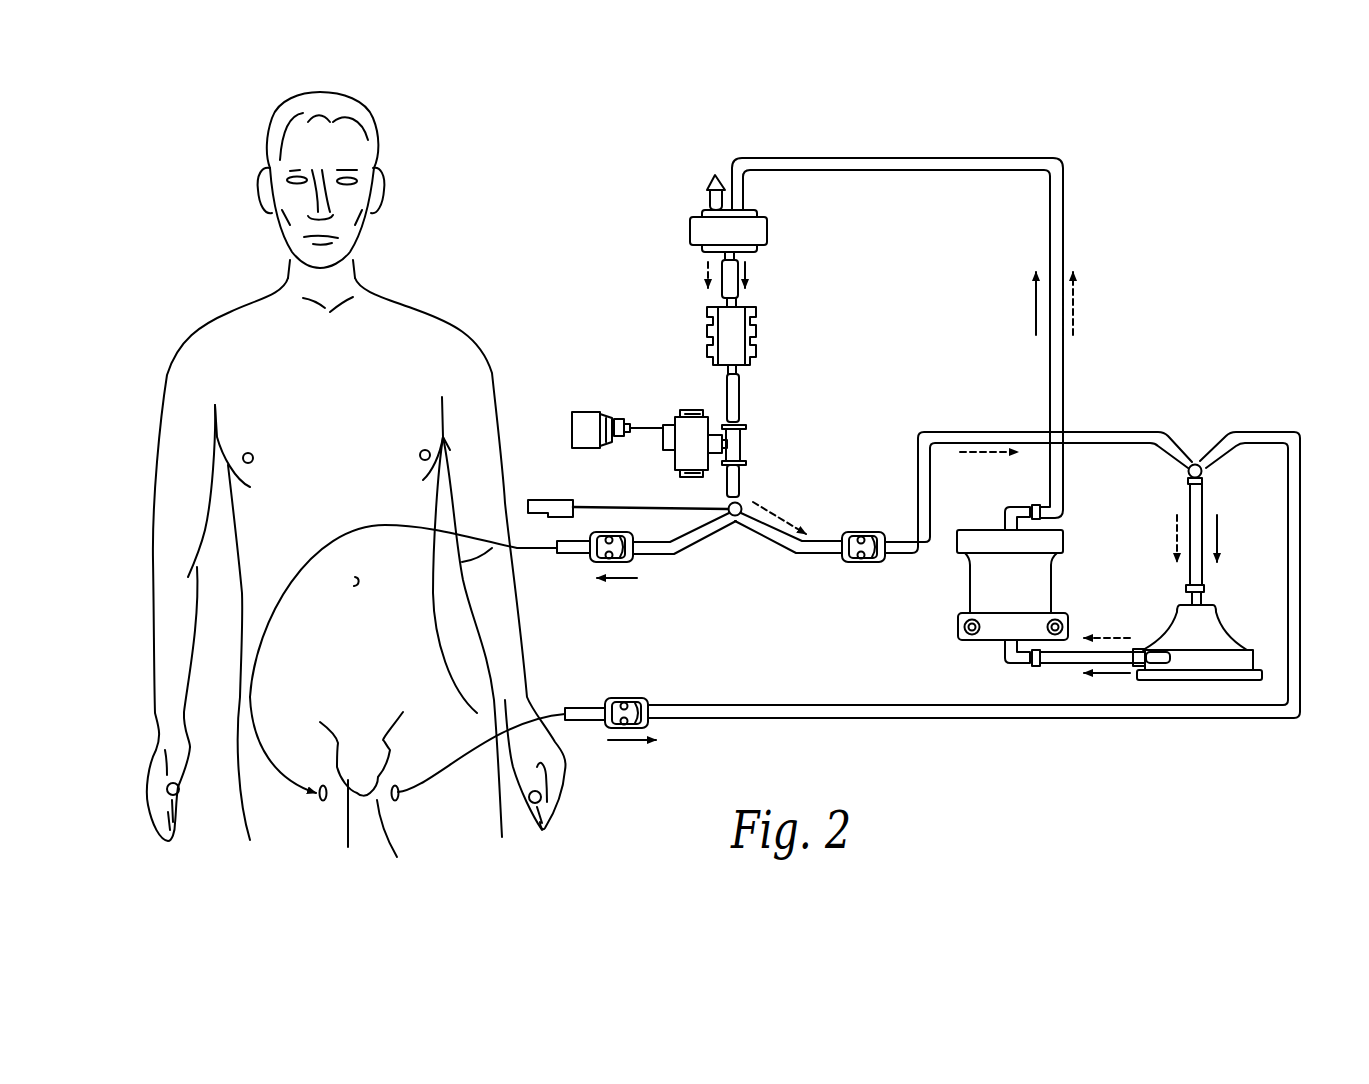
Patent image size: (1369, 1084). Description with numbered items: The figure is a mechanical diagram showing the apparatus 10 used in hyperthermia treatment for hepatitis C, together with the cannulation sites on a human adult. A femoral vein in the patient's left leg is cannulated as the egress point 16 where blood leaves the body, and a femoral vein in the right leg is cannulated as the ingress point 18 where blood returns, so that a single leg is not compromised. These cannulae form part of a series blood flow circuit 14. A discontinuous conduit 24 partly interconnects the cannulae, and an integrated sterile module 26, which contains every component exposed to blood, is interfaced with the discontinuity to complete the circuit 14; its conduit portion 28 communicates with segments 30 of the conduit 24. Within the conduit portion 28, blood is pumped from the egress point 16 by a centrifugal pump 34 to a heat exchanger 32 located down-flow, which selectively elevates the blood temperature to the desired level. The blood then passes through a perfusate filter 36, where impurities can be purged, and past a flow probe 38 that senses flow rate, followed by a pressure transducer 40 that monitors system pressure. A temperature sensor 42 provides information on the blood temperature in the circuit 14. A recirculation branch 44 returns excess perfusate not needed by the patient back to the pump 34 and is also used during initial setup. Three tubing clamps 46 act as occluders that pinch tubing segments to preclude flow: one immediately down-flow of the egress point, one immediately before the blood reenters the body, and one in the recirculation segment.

The apparatus 10 is at (1014, 141).
The series blood flow circuit 14 is at (941, 728).
The egress point of cannulation 16 is at (397, 800).
The ingress point of cannulation 18 is at (327, 800).
The discontinuous conduit 24 is at (393, 518).
The integrated sterile module 26 is at (1103, 274).
The conduit portion 28 is at (904, 155).
The segments of the discontinuous conduit 30 is at (299, 564).
The heat exchanger 32 is at (978, 583).
The centrifugal pump 34 is at (1220, 624).
The perfusate filter 36 is at (693, 228).
The flow probe 38 is at (722, 330).
The pressure transducer 40 is at (675, 447).
The temperature sensor 42 is at (555, 498).
The recirculation branch 44 is at (936, 430).
The tubing clamps 46 is at (633, 558).